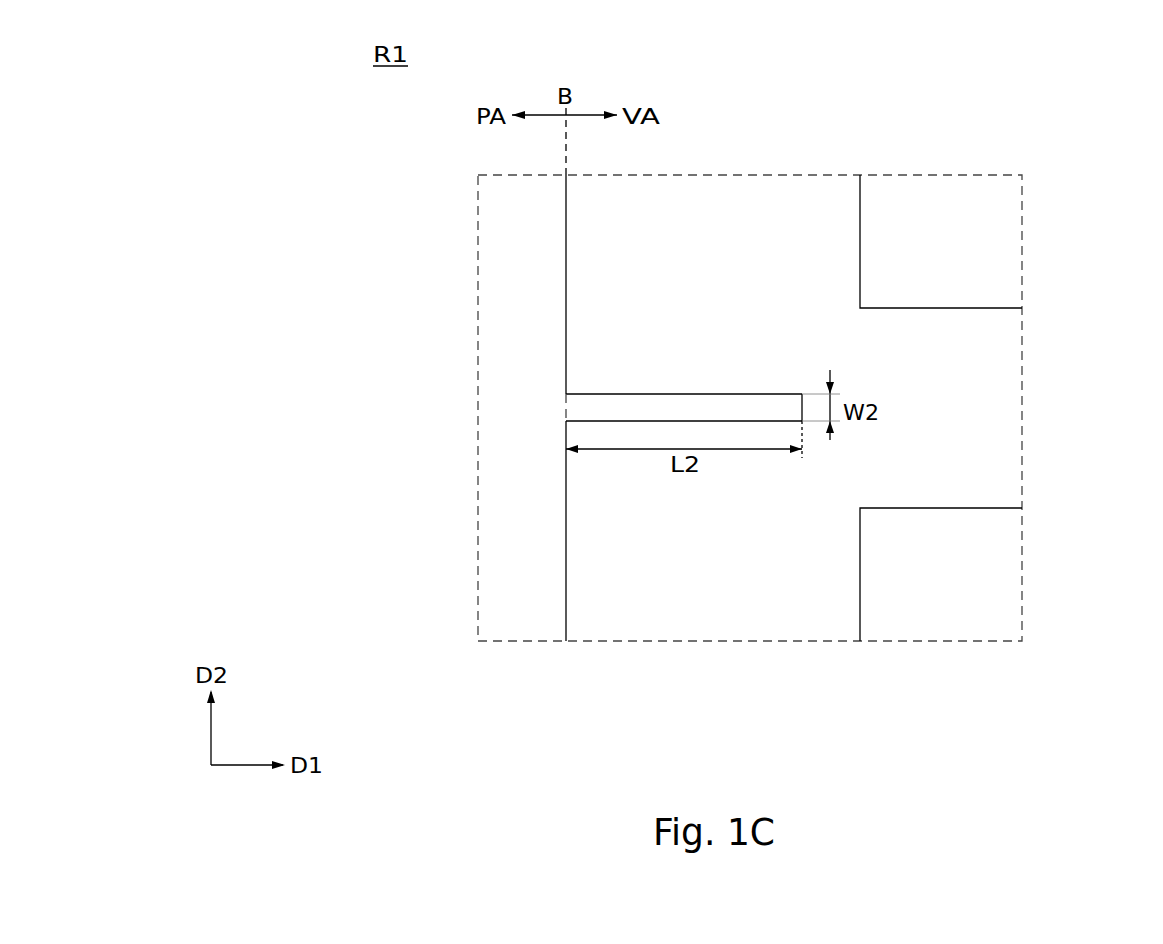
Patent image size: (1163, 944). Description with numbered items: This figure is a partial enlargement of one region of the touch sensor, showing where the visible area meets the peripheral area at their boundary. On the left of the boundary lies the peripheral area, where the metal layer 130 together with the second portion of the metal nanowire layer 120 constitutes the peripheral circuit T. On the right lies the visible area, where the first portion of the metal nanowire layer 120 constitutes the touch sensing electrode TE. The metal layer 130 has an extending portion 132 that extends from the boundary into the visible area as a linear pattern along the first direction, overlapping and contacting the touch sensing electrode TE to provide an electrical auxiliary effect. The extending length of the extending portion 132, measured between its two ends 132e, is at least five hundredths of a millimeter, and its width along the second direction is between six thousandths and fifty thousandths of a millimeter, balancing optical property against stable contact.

The metal nanowire layer 120 is at (992, 438).
The metal layer 130 is at (507, 603).
The extending portion 132 is at (737, 408).
The ends of the extending portion 132e is at (806, 400).
The peripheral circuit T is at (440, 450).
The touch sensing electrode TE is at (1054, 361).